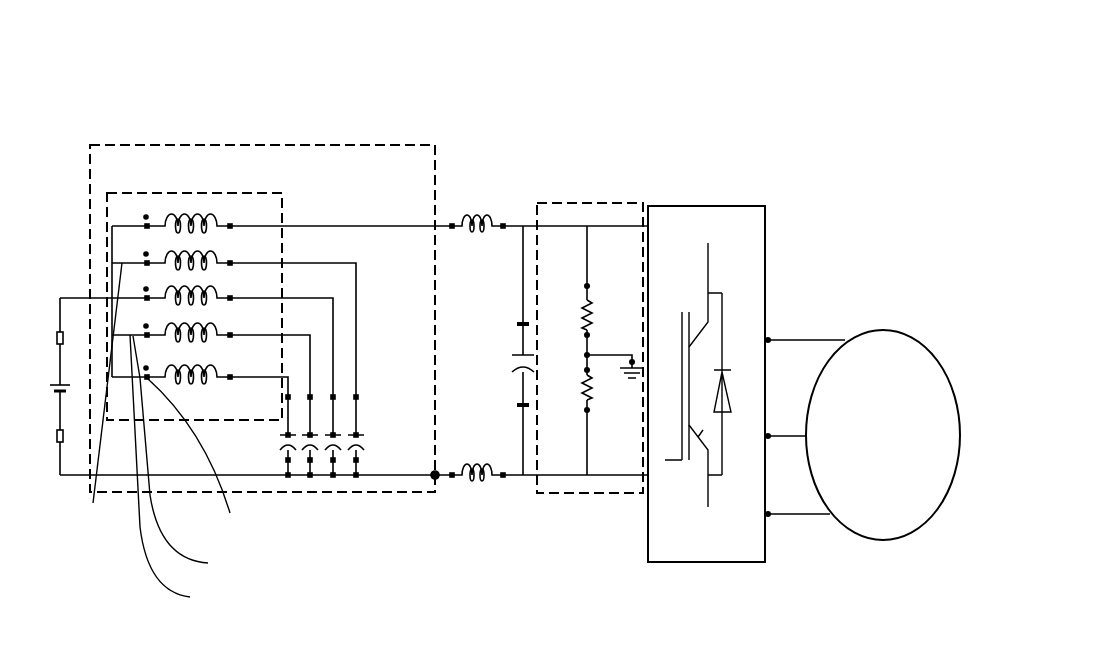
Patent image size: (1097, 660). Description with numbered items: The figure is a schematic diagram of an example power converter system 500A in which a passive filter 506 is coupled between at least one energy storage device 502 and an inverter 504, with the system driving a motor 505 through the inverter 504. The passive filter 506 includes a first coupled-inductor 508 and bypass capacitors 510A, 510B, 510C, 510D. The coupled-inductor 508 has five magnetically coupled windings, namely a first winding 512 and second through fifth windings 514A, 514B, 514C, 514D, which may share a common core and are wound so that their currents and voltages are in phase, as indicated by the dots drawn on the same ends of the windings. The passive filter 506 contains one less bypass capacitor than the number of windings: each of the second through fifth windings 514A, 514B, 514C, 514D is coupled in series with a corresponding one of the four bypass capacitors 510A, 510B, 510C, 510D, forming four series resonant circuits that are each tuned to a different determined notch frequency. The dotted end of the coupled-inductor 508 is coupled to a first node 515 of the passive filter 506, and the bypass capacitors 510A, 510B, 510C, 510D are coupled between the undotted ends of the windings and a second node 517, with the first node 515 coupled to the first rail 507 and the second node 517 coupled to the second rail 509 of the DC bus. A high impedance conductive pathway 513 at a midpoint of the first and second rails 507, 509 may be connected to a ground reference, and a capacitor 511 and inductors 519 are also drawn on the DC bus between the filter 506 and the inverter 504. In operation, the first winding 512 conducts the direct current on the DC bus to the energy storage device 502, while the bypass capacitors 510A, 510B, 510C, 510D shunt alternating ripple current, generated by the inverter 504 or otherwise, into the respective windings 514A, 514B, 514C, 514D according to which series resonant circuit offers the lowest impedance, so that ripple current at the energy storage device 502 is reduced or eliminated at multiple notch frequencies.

The power converter system 500A is at (786, 120).
The energy storage device 502 is at (57, 393).
The inverter 504 is at (772, 253).
The motor 505 is at (908, 450).
The passive filter 506 is at (370, 145).
The first rail 507 is at (538, 206).
The first coupled-inductor 508 is at (265, 193).
The second rail 509 is at (537, 488).
The bypass capacitor 510A is at (359, 451).
The bypass capacitor 510B is at (336, 451).
The bypass capacitor 510C is at (313, 451).
The bypass capacitor 510D is at (291, 451).
The DC link capacitor 511 is at (512, 365).
The first winding 512 is at (195, 222).
The high impedance conductive pathway 513 is at (622, 497).
The second winding 514A is at (99, 398).
The third winding 514B is at (196, 474).
The fourth winding 514C is at (206, 463).
The fifth winding 514D is at (209, 458).
The first node 515 is at (75, 298).
The second node 517 is at (438, 478).
The filter inductor 519 is at (473, 213).